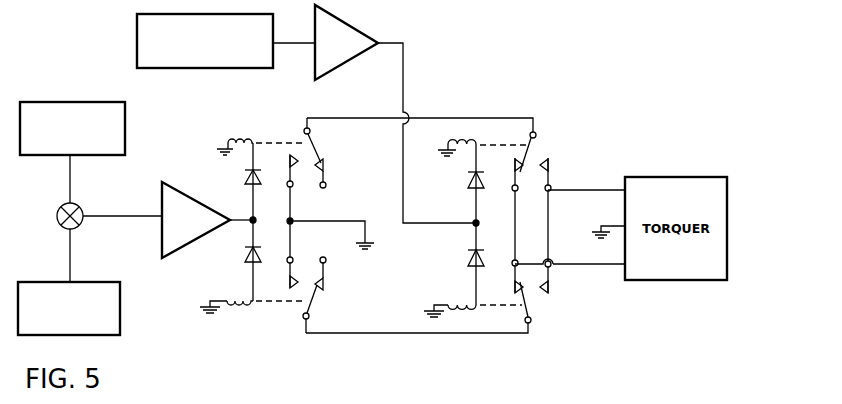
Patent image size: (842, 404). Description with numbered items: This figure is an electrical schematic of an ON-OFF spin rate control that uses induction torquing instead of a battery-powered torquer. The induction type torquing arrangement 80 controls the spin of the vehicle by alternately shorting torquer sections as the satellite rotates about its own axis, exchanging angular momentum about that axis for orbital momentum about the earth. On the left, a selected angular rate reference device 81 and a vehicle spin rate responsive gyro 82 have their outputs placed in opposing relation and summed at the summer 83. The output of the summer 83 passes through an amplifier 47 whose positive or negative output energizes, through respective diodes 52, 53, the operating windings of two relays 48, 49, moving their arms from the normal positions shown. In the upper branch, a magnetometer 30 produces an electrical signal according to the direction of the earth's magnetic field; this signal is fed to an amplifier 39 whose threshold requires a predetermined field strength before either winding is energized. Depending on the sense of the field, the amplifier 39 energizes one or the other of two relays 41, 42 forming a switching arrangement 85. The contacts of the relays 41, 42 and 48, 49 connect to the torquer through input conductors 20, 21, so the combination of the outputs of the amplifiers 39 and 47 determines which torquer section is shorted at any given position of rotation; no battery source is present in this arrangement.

The magnetometer 30 is at (137, 58).
The amplifier 39 is at (362, 54).
The induction type torquing arrangement 80 is at (513, 81).
The angular rate reference device 81 is at (125, 147).
The vehicle spin rate responsive gyro 82 is at (118, 283).
The summer 83 is at (60, 228).
The amplifier 47 is at (209, 236).
The relay 48 is at (293, 134).
The relay 49 is at (324, 290).
The diode 52 is at (259, 185).
The diode 53 is at (261, 258).
The switching arrangement 85 is at (352, 193).
The relay 41 is at (545, 146).
The relay 42 is at (544, 302).
The input conductor 20 is at (586, 188).
The input conductor 21 is at (607, 266).